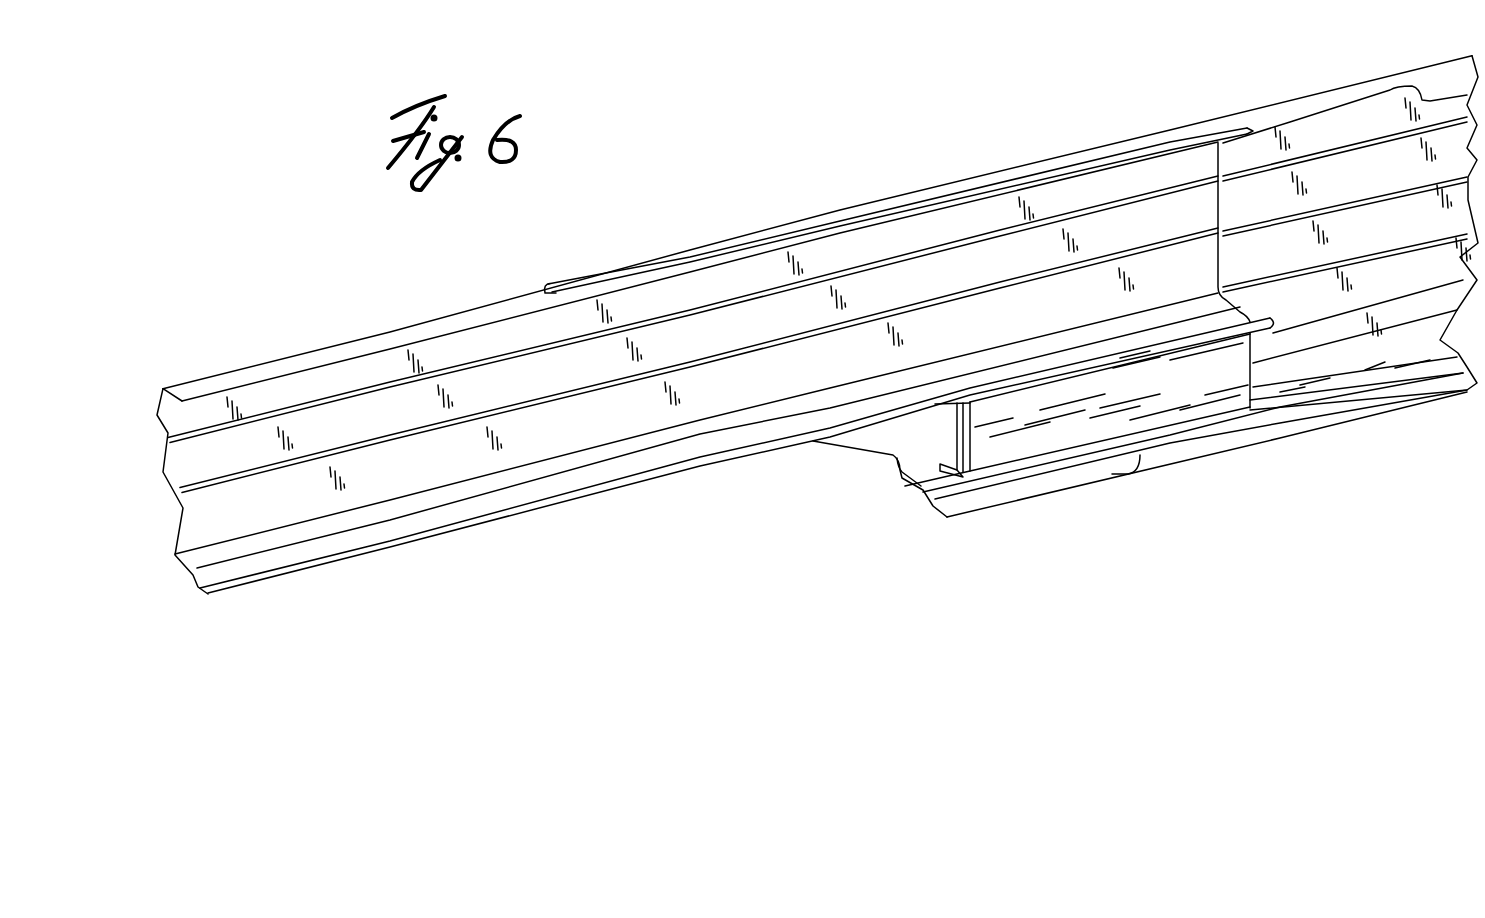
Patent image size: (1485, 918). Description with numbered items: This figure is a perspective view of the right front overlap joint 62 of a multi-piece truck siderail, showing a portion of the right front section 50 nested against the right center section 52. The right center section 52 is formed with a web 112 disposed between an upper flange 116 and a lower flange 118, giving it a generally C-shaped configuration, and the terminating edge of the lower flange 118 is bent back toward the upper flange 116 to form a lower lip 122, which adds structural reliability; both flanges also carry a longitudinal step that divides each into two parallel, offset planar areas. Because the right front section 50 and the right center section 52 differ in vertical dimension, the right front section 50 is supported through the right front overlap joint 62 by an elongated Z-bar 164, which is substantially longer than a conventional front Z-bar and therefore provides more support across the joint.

The right front section 50 is at (304, 343).
The right center section 52 is at (1370, 68).
The right front overlap joint 62 is at (1075, 135).
The upper flange 116 is at (1299, 103).
The web 112 is at (1370, 187).
The lower flange 118 is at (920, 492).
The elongated Z-bar 164 is at (987, 457).
The lower lip 122 is at (1190, 447).